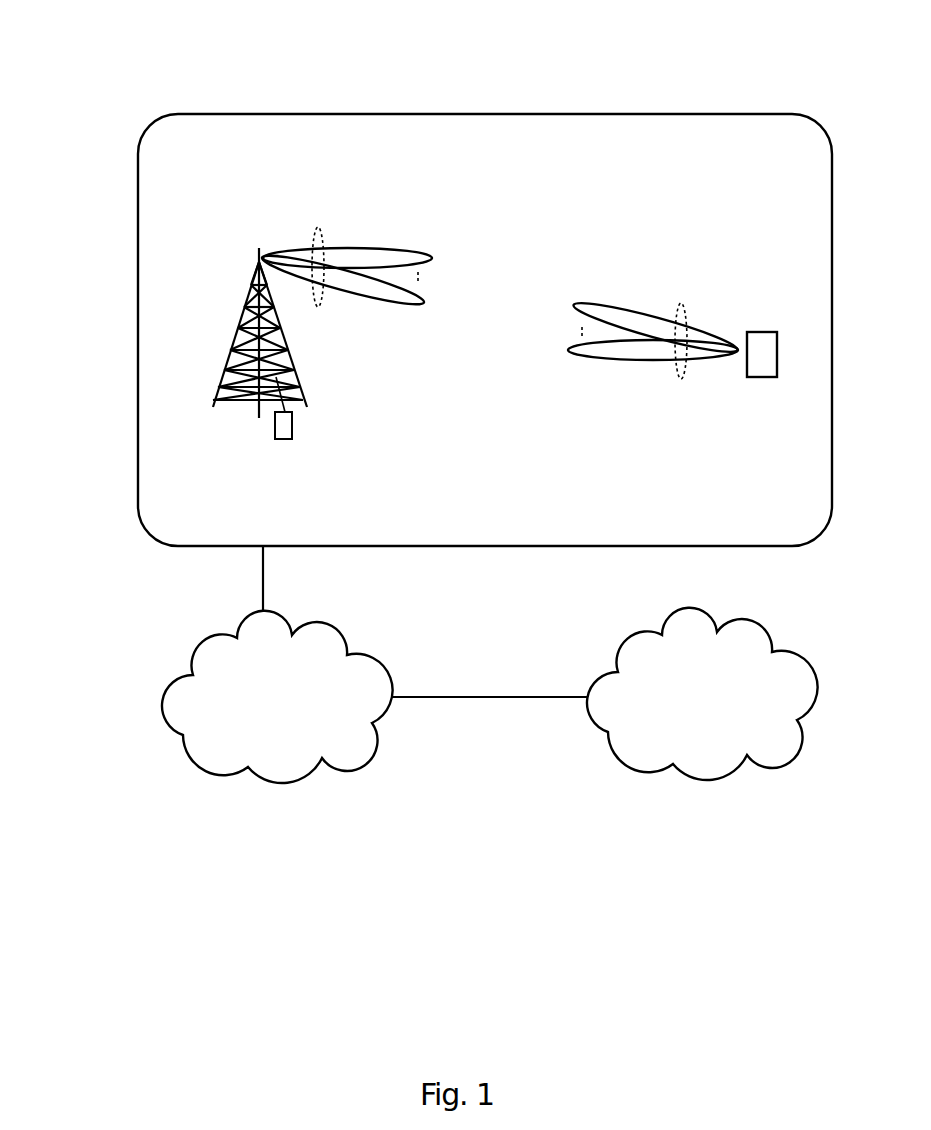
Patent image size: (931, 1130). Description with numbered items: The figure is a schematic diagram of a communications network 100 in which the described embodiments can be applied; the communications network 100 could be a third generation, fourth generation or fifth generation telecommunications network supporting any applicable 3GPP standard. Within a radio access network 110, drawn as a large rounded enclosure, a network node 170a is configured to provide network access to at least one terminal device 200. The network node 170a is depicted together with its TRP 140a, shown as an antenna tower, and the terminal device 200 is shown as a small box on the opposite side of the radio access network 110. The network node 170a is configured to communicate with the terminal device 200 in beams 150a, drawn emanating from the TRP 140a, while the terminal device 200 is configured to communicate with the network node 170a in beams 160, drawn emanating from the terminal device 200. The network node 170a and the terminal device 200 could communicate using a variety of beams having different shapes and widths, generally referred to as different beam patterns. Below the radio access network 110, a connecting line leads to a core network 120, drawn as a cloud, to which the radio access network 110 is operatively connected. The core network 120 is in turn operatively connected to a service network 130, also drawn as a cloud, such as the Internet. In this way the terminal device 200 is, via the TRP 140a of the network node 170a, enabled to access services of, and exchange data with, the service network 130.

The communications network 100 is at (222, 58).
The radio access network 110 is at (138, 380).
The core network 120 is at (277, 697).
The service network 130 is at (702, 694).
The TRP 140a is at (257, 264).
The beams 150a is at (322, 228).
The beams 160 is at (681, 382).
The network node 170a is at (275, 430).
The terminal device 200 is at (763, 378).